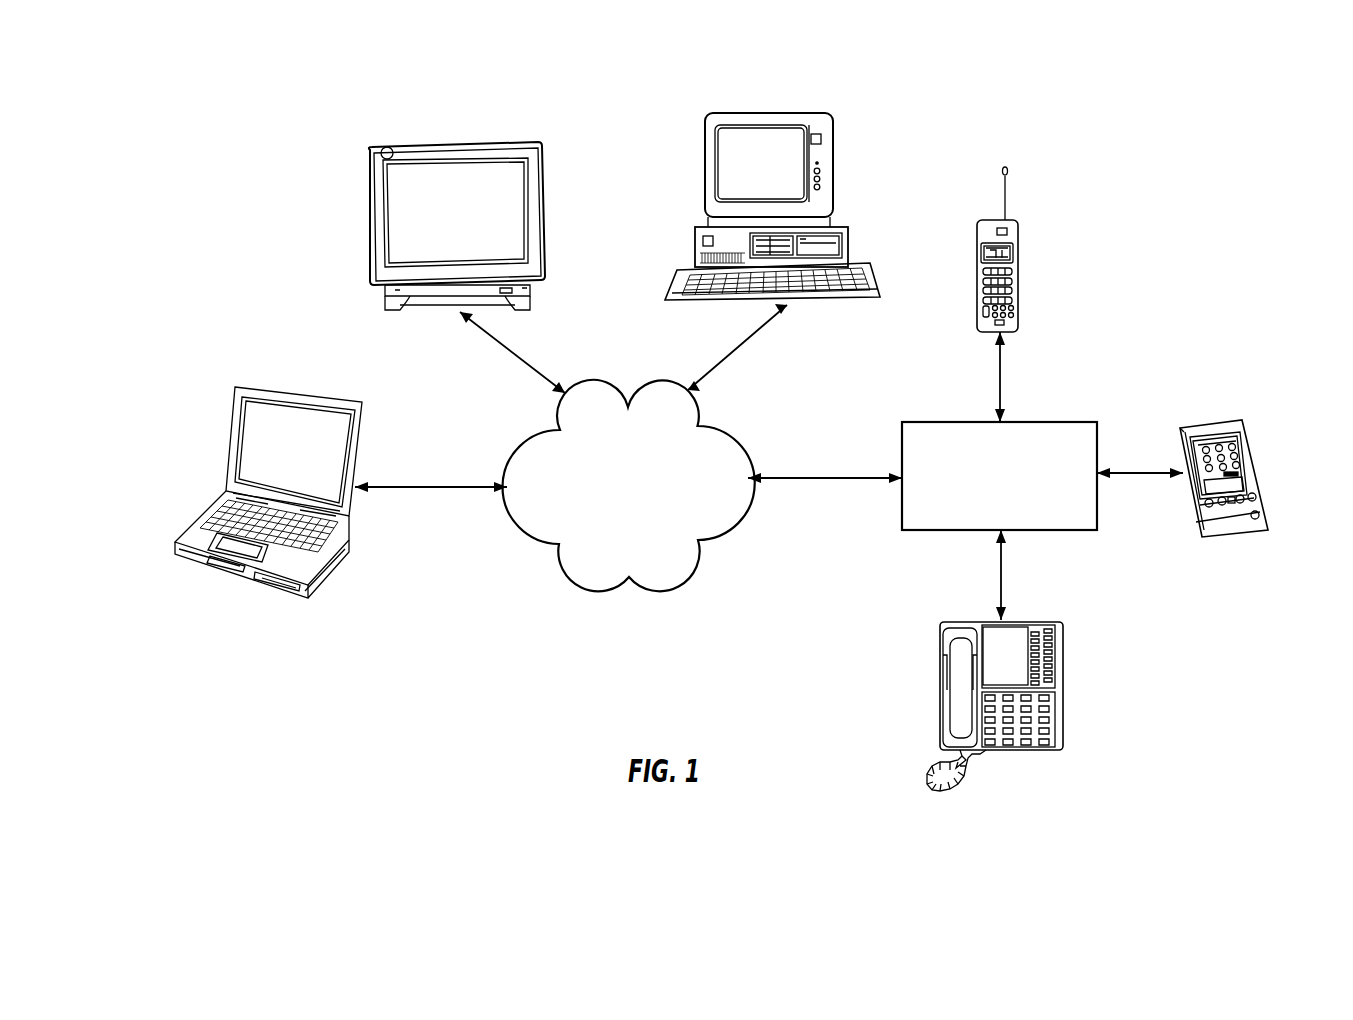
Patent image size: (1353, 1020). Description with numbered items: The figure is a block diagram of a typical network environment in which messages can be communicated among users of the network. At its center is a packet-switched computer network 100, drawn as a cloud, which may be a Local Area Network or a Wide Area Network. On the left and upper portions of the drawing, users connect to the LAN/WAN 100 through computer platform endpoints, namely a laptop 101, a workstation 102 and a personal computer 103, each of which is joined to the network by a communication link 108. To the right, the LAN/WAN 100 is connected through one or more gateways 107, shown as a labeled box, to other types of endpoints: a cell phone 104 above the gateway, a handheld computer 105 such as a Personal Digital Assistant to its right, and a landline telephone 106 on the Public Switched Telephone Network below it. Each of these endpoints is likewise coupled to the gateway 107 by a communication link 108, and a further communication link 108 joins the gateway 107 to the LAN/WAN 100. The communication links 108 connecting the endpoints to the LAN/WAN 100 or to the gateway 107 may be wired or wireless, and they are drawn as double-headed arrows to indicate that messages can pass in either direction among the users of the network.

The packet-switched computer network 100 is at (648, 548).
The laptop 101 is at (232, 427).
The workstation 102 is at (400, 145).
The personal computer 103 is at (740, 113).
The cell phone 104 is at (1015, 240).
The handheld computer 105 is at (1218, 423).
The landline telephone 106 is at (1063, 650).
The gateway 107 is at (1021, 520).
The communication links 108 is at (460, 488).